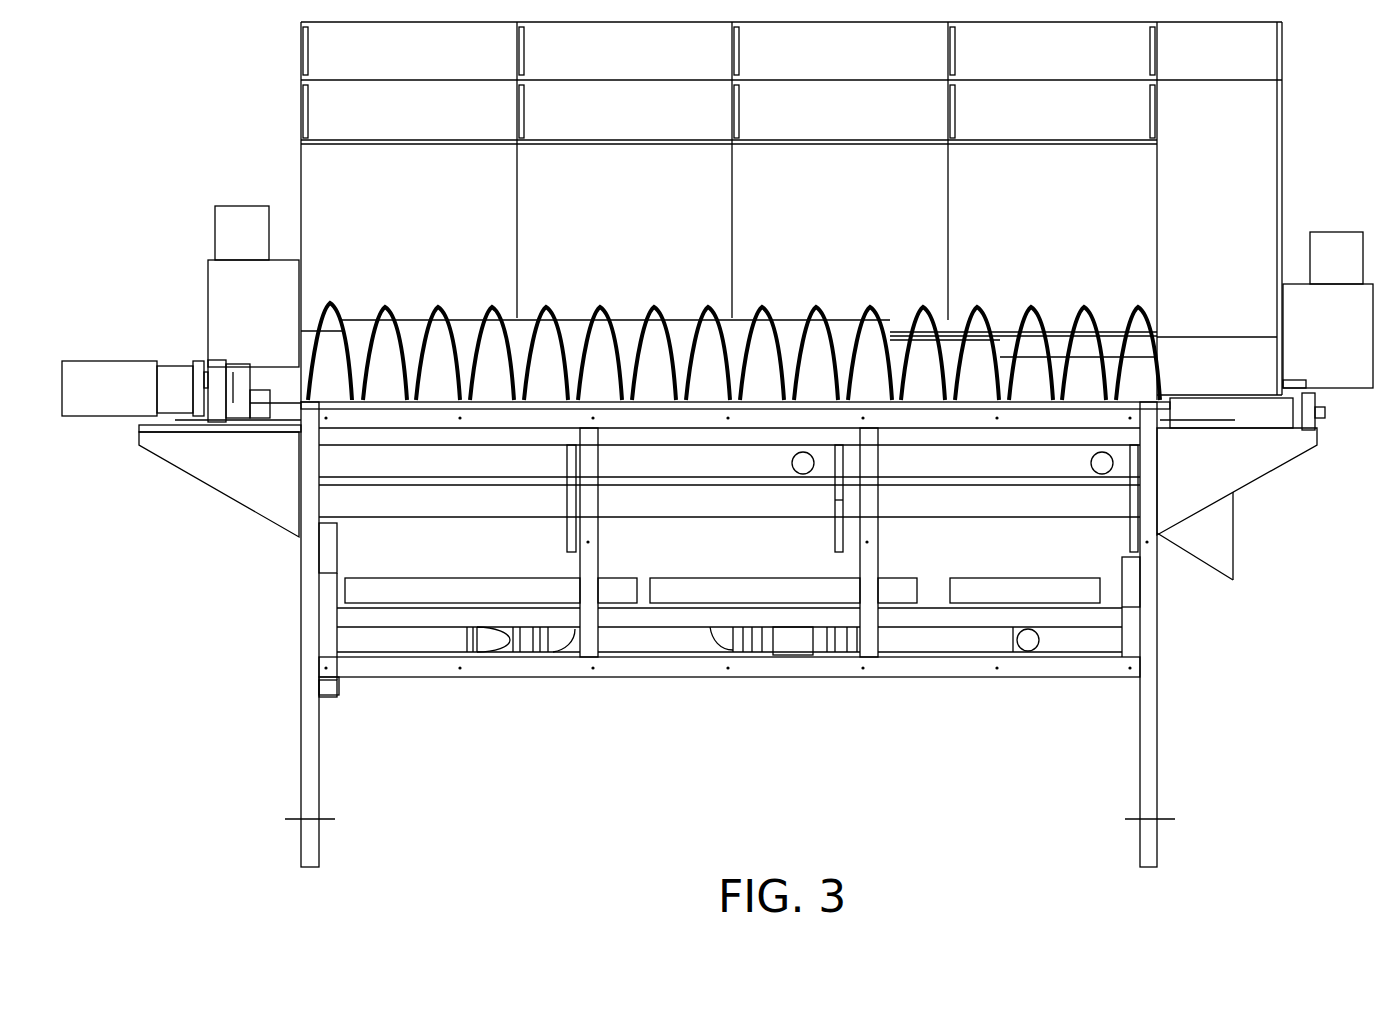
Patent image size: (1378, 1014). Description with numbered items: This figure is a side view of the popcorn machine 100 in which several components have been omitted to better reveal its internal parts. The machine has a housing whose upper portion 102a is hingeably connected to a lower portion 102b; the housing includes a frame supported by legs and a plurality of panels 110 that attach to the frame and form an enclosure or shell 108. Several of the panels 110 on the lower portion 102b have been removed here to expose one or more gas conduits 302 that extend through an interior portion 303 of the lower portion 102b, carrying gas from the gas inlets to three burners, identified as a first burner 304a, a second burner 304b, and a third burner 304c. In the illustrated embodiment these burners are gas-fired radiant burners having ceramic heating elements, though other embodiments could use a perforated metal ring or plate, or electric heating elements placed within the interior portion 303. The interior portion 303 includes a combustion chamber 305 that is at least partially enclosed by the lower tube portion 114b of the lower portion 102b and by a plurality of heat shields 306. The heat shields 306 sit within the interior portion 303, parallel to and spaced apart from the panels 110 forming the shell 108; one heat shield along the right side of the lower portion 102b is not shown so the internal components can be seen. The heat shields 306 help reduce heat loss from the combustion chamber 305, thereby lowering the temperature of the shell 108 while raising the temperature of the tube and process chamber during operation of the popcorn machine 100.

The popcorn machine 100 is at (237, 71).
The upper portion 102a is at (1282, 141).
The lower portion 102b is at (301, 590).
The shell 108 is at (301, 607).
The panels 110 is at (301, 573).
The lower tube portion 114b is at (703, 518).
The gas conduits 302 is at (410, 654).
The interior portion 303 is at (1102, 569).
The first burner 304a is at (452, 578).
The second burner 304b is at (790, 578).
The third burner 304c is at (1022, 578).
The combustion chamber 305 is at (352, 553).
The heat shields 306 is at (348, 543).